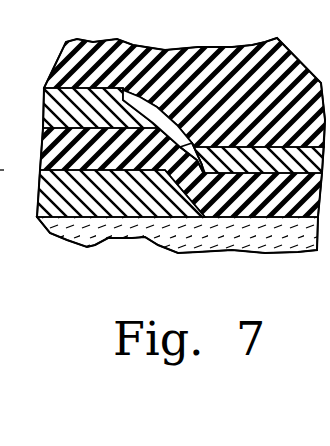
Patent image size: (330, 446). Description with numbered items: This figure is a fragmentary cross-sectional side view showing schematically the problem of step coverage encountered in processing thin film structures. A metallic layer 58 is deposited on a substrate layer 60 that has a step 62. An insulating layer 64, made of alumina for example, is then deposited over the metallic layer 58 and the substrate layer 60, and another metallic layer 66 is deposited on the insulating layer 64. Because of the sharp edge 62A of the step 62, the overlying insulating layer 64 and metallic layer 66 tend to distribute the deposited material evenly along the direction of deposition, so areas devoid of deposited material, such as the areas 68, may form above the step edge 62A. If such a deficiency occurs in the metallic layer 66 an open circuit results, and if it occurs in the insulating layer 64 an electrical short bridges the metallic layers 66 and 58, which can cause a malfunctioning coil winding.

The metallic layer 58 is at (44, 190).
The substrate layer 60 is at (106, 236).
The step 62 is at (197, 140).
The sharp edge 62A is at (176, 186).
The insulating layer 64 is at (60, 153).
The metallic layer 66 is at (58, 113).
The areas devoid of deposited material 68 is at (205, 146).